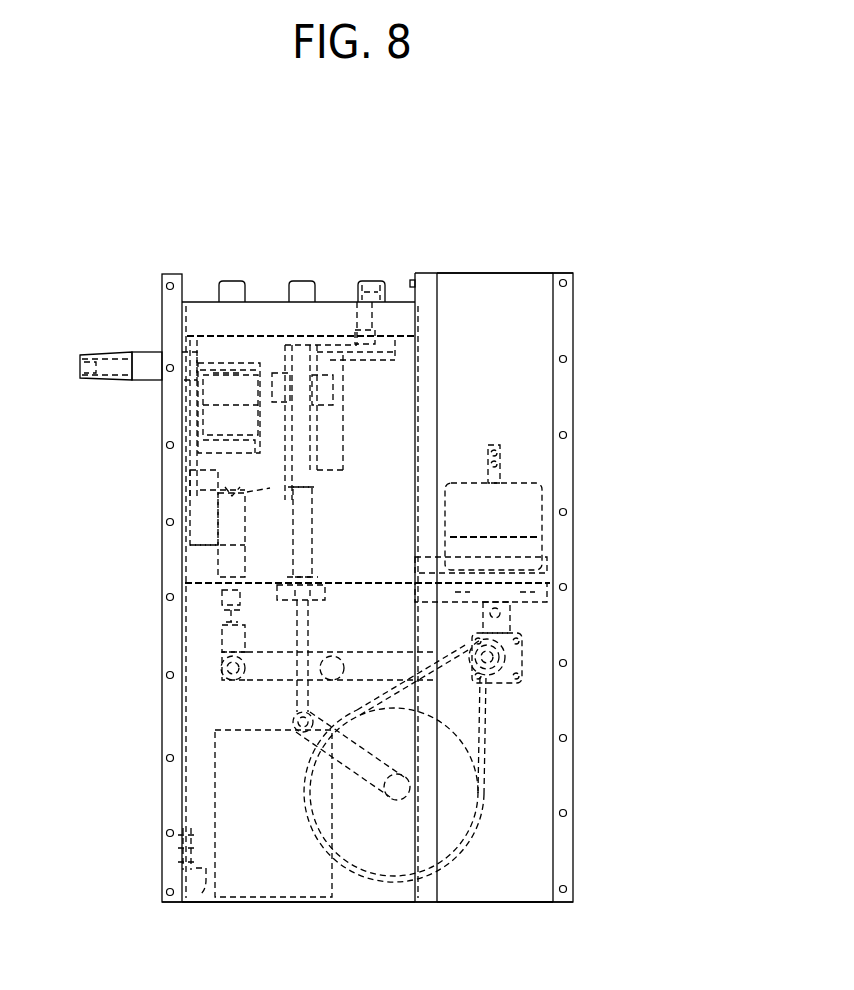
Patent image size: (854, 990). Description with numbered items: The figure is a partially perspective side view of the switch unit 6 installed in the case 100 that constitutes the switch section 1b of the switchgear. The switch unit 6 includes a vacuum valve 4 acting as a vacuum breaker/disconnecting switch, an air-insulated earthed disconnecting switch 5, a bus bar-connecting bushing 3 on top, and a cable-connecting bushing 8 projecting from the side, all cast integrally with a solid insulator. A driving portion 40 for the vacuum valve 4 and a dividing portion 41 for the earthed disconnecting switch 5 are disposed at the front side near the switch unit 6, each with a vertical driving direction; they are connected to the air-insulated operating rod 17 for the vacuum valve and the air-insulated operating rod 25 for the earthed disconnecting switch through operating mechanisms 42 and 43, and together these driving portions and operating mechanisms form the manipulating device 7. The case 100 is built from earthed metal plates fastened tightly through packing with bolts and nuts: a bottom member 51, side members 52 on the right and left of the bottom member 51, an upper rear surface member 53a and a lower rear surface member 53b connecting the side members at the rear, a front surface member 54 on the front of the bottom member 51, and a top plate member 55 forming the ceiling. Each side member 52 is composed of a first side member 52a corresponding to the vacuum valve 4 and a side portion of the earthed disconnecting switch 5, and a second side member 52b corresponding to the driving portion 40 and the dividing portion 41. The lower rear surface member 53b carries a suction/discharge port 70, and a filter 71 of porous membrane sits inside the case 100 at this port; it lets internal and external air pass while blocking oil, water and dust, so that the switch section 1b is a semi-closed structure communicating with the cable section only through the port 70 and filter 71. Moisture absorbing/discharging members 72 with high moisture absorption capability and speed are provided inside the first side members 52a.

The case 100 is at (596, 238).
The switch section 1b is at (539, 381).
The bus bar-connecting bushing 3 is at (233, 281).
The vacuum valve 4 is at (218, 414).
The earthed disconnecting switch 5 is at (292, 362).
The switch unit 6 is at (265, 328).
The manipulating device 7 is at (520, 627).
The cable-connecting bushing 8 is at (98, 350).
The air-insulated operating rod for the vacuum valve 17 is at (222, 567).
The air-insulated operating rod for the earthed disconnecting switch 25 is at (300, 520).
The driving portion 40 is at (525, 525).
The dividing portion 41 is at (525, 682).
The operating mechanism 42 is at (270, 680).
The operating mechanism 43 is at (297, 768).
The bottom member 51 is at (467, 900).
The side member 52 is at (523, 838).
The first side member 52a is at (350, 880).
The second side member 52b is at (520, 887).
The upper rear surface member 53a is at (196, 490).
The lower rear surface member 53b is at (172, 650).
The front surface member 54 is at (560, 413).
The top plate member 55 is at (476, 272).
The suction/discharge port 70 is at (180, 848).
The filter 71 is at (206, 868).
The moisture absorbing/discharging member 72 is at (273, 862).